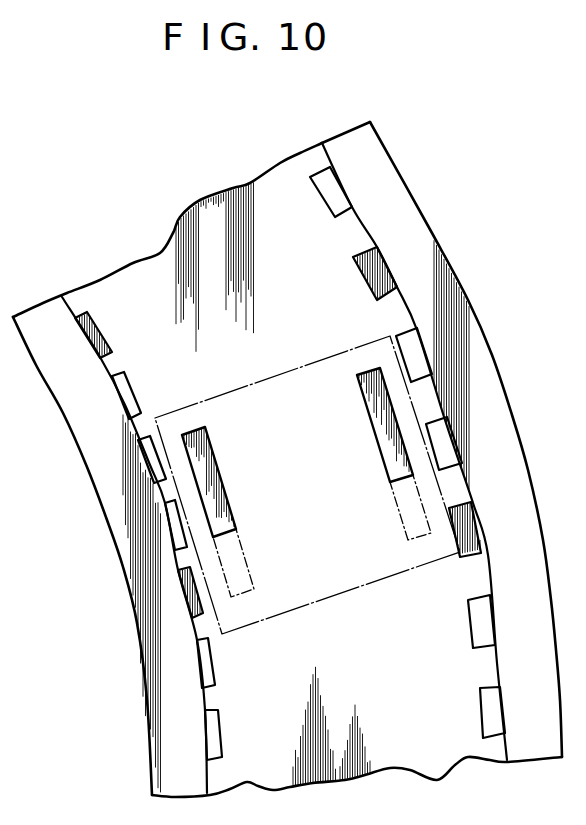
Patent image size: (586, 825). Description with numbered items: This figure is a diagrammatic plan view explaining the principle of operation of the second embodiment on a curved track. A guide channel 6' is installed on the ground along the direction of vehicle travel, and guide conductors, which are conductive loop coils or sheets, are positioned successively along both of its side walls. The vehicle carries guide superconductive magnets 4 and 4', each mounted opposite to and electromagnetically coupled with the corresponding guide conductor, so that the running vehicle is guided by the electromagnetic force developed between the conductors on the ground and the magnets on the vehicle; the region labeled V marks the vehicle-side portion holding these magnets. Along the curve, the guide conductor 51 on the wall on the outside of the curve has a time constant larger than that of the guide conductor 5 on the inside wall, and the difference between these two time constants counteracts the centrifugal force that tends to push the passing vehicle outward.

The guide channel 6' is at (167, 230).
The region V is at (318, 360).
The guide superconductive magnet 4 is at (218, 512).
The guide superconductive magnet 4' is at (385, 454).
The guide conductor 5 is at (213, 681).
The guide conductor 51 is at (471, 631).